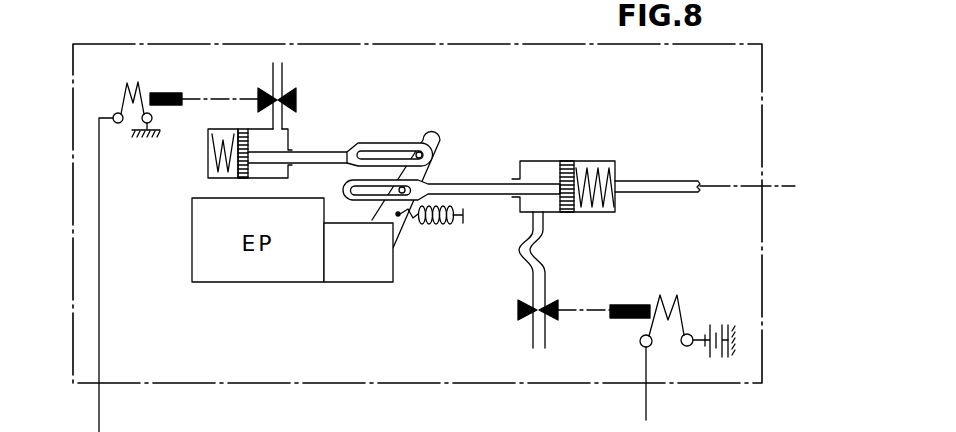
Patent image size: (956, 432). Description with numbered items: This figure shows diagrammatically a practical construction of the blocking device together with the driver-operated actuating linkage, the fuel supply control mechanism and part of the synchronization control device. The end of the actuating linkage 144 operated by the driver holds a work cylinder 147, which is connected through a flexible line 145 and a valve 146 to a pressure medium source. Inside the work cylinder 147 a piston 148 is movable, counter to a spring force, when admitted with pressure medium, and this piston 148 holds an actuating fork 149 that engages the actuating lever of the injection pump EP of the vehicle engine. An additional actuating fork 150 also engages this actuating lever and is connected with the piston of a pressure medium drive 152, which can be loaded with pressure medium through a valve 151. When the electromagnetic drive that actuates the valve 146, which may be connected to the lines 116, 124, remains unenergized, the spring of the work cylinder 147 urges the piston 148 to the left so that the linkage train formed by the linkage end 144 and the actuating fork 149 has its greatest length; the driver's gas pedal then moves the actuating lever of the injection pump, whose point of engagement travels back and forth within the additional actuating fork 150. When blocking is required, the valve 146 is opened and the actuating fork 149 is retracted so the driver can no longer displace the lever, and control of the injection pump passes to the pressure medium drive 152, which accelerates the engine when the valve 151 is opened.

The line 116 is at (687, 360).
The line 124 is at (424, 234).
The end of the actuating linkage 144 is at (670, 181).
The flexible line 145 is at (545, 263).
The valve 146 is at (518, 310).
The work cylinder 147 is at (533, 161).
The piston 148 is at (573, 172).
The actuating fork 149 is at (468, 182).
The additional actuating fork 150 is at (350, 145).
The valve 151 is at (296, 100).
The pressure medium drive 152 is at (208, 152).